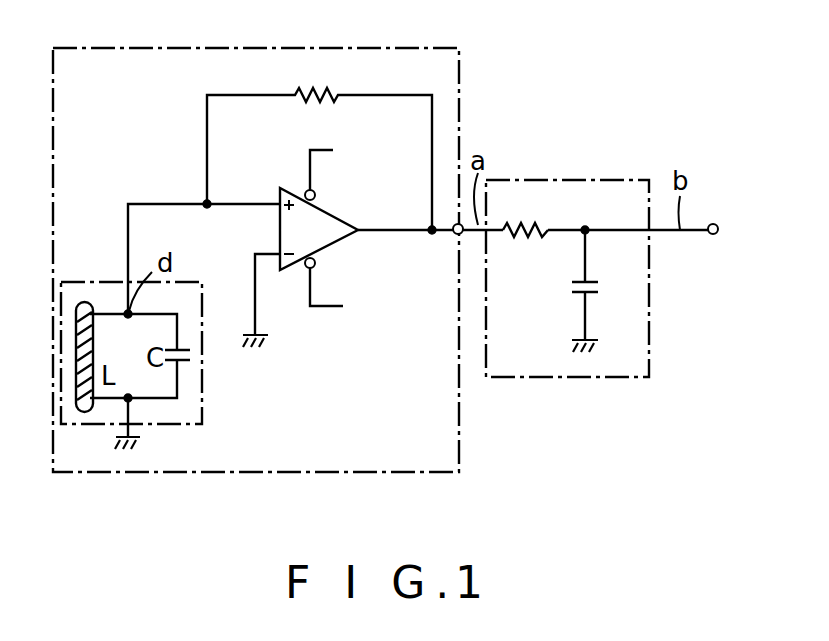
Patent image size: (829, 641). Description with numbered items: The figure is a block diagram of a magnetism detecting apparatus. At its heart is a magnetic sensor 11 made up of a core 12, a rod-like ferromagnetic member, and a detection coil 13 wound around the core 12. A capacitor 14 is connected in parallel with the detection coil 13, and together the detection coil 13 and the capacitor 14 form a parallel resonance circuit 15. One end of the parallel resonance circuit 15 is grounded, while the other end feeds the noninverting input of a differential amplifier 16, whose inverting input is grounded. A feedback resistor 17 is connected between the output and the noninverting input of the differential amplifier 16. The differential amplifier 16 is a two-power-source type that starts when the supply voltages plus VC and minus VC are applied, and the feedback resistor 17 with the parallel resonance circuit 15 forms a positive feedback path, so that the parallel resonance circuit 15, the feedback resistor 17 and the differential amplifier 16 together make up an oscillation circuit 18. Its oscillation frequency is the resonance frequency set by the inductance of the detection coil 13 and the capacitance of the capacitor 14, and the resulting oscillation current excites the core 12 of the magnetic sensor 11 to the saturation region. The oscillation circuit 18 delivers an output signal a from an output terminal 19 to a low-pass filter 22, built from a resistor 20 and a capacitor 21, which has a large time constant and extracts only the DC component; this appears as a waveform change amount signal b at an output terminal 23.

The magnetic sensor 11 is at (80, 385).
The core 12 is at (86, 410).
The detection coil 13 is at (96, 340).
The capacitor 14 is at (187, 363).
The parallel resonance circuit 15 is at (111, 282).
The differential amplifier 16 is at (328, 218).
The feedback resistor 17 is at (335, 84).
The oscillation circuit 18 is at (283, 48).
The output terminal 19 is at (456, 238).
The resistor 20 is at (522, 241).
The capacitor 21 is at (578, 298).
The low-pass filter 22 is at (567, 251).
The output terminal 23 is at (718, 231).